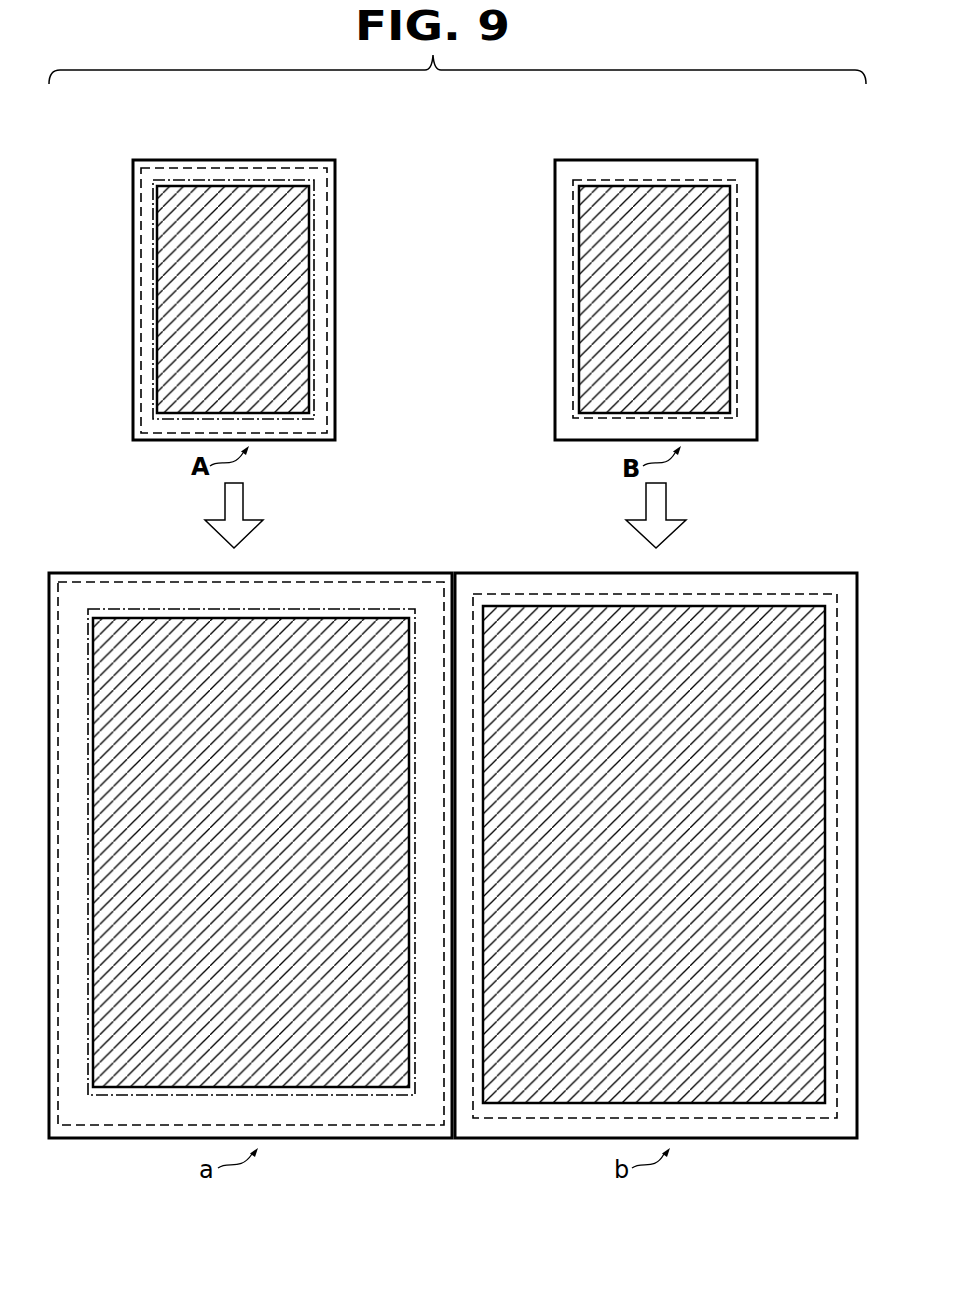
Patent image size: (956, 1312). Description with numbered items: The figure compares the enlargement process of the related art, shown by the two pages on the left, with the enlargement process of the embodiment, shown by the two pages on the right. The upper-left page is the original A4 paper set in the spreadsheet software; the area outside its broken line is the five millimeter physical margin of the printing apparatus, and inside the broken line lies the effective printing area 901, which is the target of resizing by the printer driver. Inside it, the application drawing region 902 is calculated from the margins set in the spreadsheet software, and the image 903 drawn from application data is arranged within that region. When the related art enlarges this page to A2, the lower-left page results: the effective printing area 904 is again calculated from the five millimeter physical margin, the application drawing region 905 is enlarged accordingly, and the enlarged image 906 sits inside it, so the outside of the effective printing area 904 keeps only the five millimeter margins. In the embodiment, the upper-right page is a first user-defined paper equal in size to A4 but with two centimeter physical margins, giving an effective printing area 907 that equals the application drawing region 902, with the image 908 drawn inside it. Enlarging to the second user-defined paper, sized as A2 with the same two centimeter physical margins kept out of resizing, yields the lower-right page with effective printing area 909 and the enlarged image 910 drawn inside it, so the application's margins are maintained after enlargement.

The effective printing area 901 is at (183, 168).
The application drawing region 902 is at (302, 180).
The image 903 is at (307, 353).
The effective printing area 907 is at (609, 180).
The image 908 is at (723, 353).
The effective printing area 904 is at (103, 582).
The application drawing region 905 is at (329, 609).
The image 906 is at (394, 618).
The effective printing area 909 is at (519, 594).
The image 910 is at (771, 606).